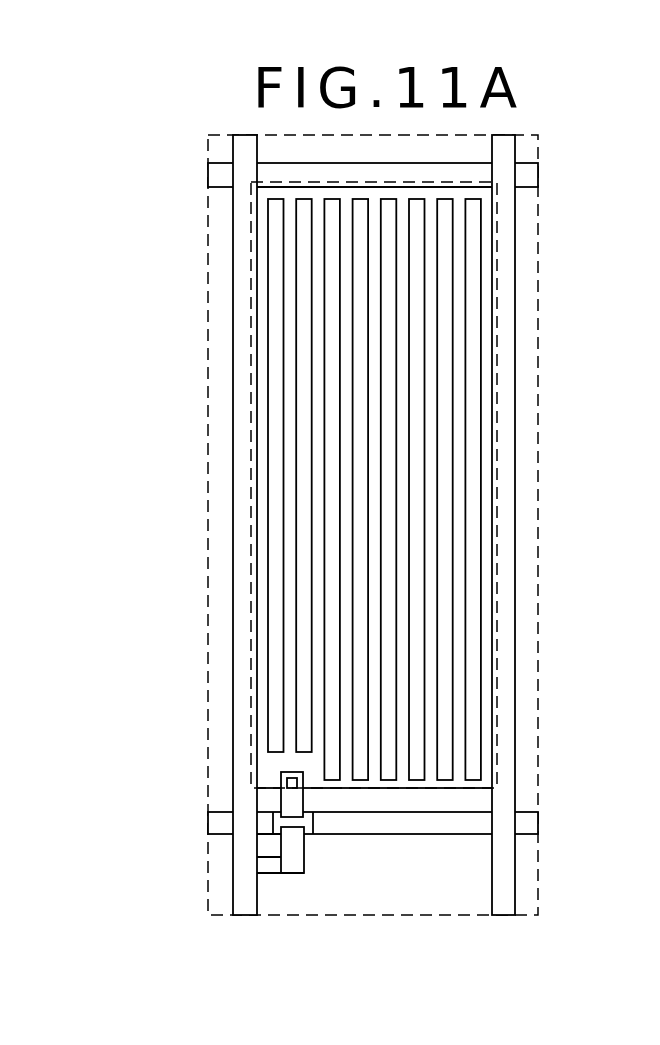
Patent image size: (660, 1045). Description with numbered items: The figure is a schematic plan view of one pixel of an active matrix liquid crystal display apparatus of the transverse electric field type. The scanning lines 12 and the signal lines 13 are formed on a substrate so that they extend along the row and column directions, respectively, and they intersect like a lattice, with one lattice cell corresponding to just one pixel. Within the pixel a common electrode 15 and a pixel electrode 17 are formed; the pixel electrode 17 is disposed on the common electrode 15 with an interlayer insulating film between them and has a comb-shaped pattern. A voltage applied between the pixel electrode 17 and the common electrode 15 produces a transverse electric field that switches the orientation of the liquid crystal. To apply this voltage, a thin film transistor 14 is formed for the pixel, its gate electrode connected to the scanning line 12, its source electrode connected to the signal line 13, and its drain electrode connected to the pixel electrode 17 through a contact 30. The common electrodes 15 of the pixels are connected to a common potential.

The scanning line 12 is at (530, 177).
The signal line 13 is at (243, 627).
The thin film transistor 14 is at (307, 823).
The common electrode 15 is at (540, 279).
The pixel electrode 17 is at (430, 782).
The contact 30 is at (292, 783).